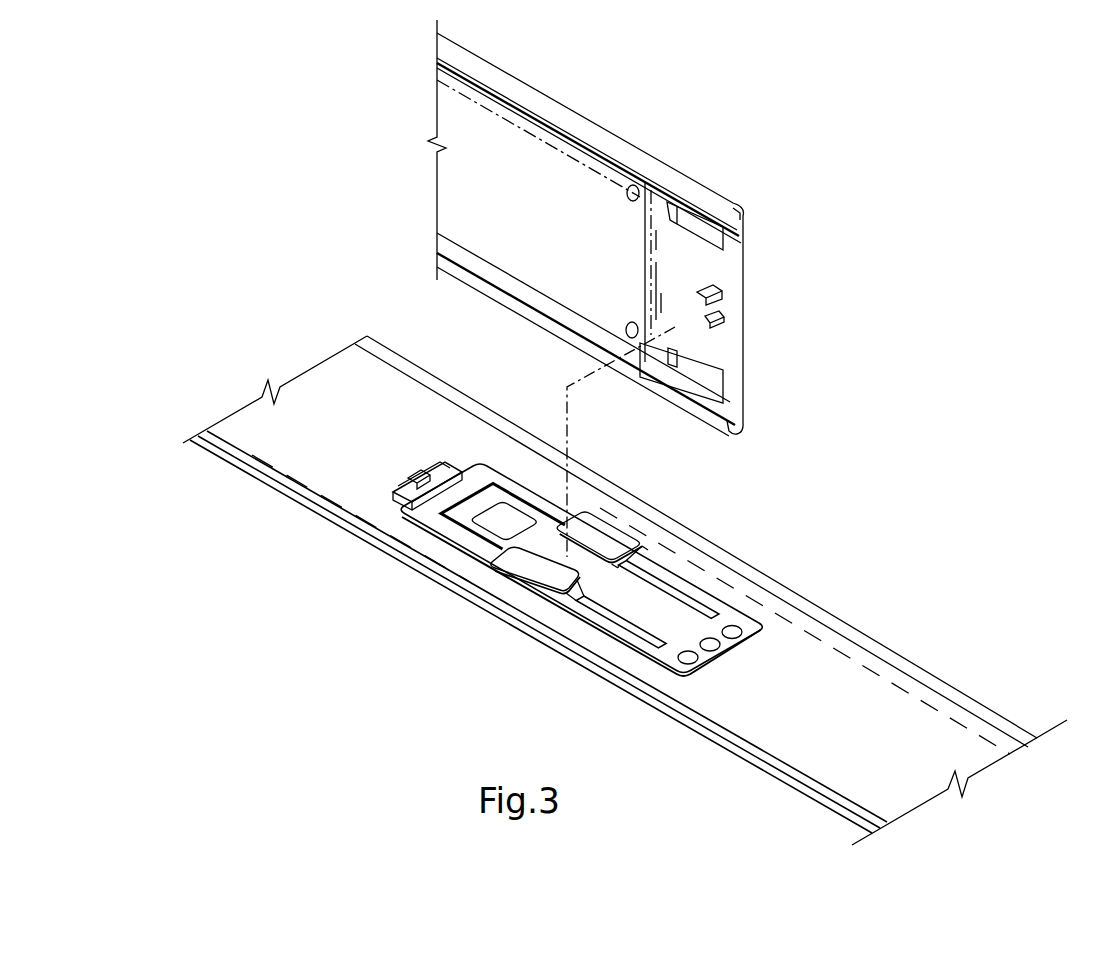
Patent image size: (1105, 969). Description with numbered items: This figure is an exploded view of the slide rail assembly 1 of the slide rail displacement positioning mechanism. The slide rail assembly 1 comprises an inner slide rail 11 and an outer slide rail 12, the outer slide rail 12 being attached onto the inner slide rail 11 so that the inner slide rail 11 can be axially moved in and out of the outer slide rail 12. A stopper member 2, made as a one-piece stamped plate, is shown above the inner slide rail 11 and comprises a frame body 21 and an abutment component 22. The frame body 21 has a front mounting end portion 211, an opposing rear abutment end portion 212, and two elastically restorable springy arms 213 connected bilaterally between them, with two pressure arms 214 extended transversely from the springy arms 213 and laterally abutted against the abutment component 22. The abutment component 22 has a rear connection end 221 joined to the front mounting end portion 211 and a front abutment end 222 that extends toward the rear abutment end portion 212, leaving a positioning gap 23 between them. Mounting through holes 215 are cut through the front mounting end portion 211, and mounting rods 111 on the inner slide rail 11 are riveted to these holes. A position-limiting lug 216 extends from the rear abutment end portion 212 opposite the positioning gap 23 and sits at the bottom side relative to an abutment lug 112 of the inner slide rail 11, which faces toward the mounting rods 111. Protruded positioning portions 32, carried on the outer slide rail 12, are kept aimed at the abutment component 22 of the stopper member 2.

The slide rail assembly 1 is at (792, 585).
The inner slide rail 11 is at (860, 630).
The mounting rods 111 is at (712, 646).
The abutment lug 112 is at (420, 473).
The outer slide rail 12 is at (612, 145).
The stopper member 2 is at (597, 637).
The frame body 21 is at (633, 652).
The front mounting end portion 211 is at (752, 634).
The rear abutment end portion 212 is at (408, 479).
The springy arms 213 is at (650, 560).
The pressure arms 214 is at (597, 530).
The mounting through holes 215 is at (696, 663).
The position-limiting lug 216 is at (447, 472).
The abutment component 22 is at (580, 603).
The rear connection end 221 is at (673, 622).
The front abutment end 222 is at (497, 517).
The positioning gap 23 is at (492, 490).
The protruded positioning portions 32 is at (722, 308).